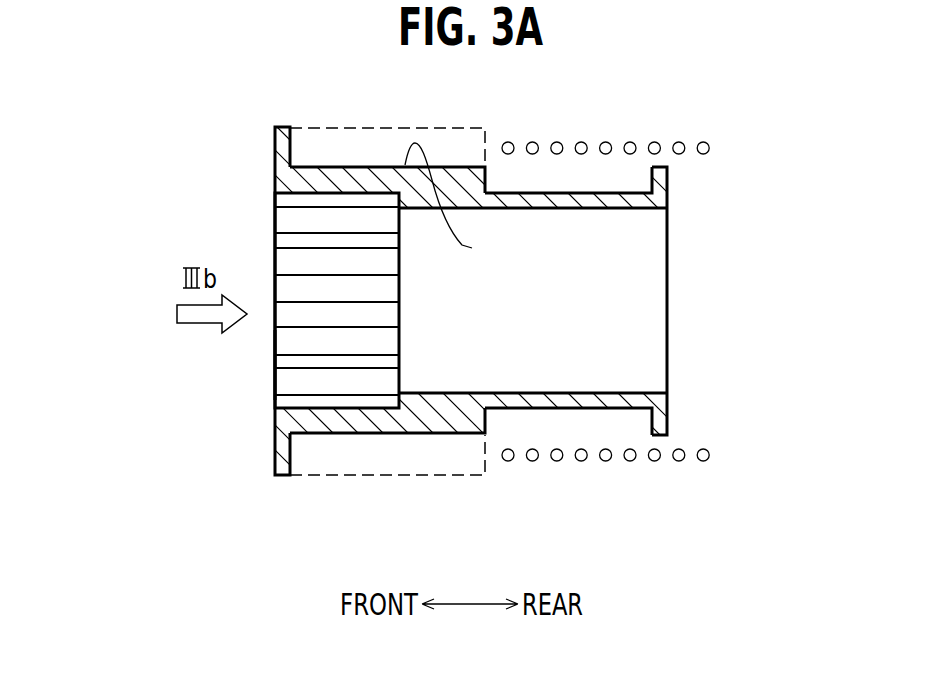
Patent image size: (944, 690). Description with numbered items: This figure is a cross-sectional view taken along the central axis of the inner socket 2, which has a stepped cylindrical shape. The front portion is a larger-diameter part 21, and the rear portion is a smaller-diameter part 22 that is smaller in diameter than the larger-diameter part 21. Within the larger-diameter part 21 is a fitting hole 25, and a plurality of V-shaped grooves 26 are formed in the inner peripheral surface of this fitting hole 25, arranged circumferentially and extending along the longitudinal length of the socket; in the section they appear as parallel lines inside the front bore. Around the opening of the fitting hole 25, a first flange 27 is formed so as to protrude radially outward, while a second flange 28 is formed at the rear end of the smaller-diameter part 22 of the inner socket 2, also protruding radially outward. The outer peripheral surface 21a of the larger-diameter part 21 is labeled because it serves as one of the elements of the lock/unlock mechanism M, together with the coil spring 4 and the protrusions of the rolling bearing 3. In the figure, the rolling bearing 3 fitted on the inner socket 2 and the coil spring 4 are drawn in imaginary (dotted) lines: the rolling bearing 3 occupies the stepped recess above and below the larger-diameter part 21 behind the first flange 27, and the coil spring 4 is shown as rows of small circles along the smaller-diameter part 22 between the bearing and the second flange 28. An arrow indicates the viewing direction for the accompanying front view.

The inner socket 2 is at (472, 334).
The larger-diameter part 21 is at (388, 434).
The smaller-diameter part 22 is at (570, 410).
The peripheral surface 21a is at (489, 205).
The fitting hole 25 is at (245, 370).
The V-shaped grooves 26 is at (332, 263).
The first flange 27 is at (275, 140).
The second flange 28 is at (669, 178).
The rolling bearing 3 is at (433, 127).
The coil spring 4 is at (613, 137).